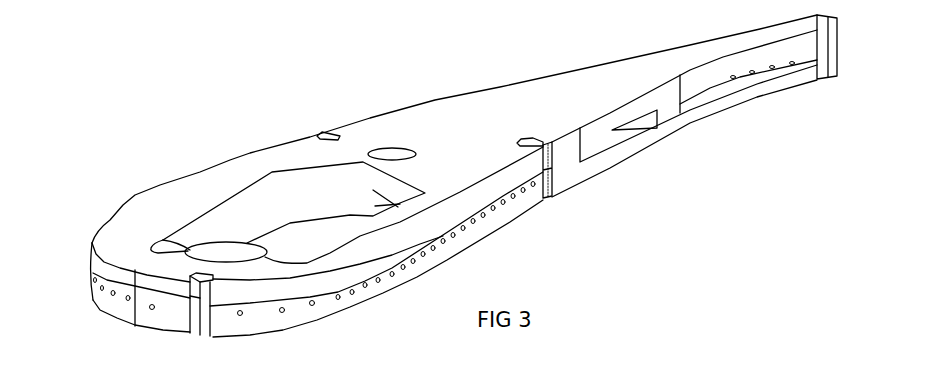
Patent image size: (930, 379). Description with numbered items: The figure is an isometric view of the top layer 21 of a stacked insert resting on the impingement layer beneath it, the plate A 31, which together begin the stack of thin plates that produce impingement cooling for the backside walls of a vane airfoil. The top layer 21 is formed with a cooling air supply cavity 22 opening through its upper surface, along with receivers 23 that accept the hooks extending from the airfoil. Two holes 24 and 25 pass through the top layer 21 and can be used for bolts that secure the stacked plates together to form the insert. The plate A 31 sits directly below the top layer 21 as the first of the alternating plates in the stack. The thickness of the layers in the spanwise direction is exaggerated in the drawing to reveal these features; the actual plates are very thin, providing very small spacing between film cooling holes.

The top layer 21 is at (245, 172).
The cooling air supply cavity 22 is at (253, 211).
The receivers 23 is at (316, 131).
The hole 24 is at (227, 257).
The hole 25 is at (393, 150).
The plate A 31 is at (477, 232).